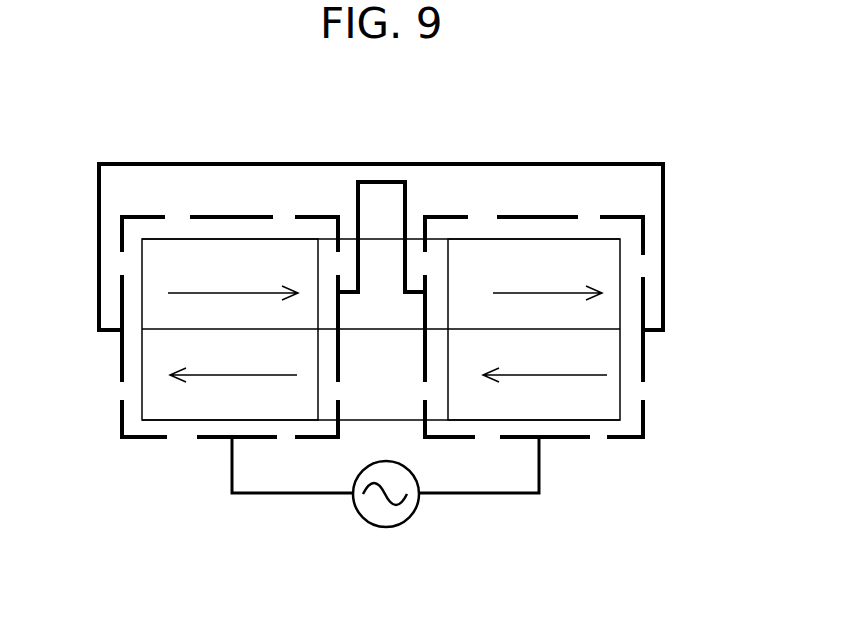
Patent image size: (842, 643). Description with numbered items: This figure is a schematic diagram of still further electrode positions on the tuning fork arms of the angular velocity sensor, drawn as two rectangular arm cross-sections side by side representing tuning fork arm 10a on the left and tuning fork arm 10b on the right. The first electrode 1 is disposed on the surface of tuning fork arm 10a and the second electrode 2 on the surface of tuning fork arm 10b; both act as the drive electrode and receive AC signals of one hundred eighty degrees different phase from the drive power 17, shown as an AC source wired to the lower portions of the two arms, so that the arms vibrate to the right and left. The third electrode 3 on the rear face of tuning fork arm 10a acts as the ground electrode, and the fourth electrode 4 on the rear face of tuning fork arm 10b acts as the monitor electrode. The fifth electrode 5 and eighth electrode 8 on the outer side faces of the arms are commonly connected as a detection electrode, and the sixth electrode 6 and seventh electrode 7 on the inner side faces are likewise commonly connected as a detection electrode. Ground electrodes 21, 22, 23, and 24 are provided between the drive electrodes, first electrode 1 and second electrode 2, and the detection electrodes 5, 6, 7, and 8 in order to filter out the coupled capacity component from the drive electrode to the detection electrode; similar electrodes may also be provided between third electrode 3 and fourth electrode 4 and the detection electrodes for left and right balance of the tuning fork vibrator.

The first electrode 1 is at (214, 323).
The second electrode 2 is at (554, 323).
The third electrode 3 is at (237, 217).
The fourth electrode 4 is at (517, 217).
The fifth electrode 5 is at (125, 362).
The sixth electrode 6 is at (338, 343).
The seventh electrode 7 is at (425, 410).
The eighth electrode 8 is at (645, 367).
The tuning fork arm 10a is at (183, 253).
The tuning fork arm 10b is at (583, 250).
The drive power 17 is at (383, 527).
The ground electrode 21 is at (145, 437).
The ground electrode 22 is at (320, 437).
The ground electrode 23 is at (455, 437).
The ground electrode 24 is at (618, 437).